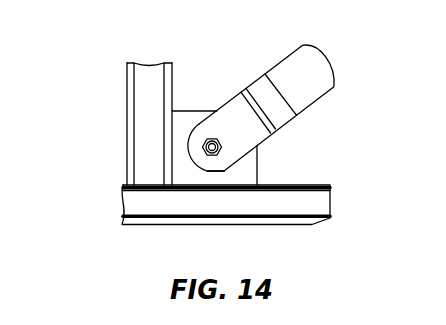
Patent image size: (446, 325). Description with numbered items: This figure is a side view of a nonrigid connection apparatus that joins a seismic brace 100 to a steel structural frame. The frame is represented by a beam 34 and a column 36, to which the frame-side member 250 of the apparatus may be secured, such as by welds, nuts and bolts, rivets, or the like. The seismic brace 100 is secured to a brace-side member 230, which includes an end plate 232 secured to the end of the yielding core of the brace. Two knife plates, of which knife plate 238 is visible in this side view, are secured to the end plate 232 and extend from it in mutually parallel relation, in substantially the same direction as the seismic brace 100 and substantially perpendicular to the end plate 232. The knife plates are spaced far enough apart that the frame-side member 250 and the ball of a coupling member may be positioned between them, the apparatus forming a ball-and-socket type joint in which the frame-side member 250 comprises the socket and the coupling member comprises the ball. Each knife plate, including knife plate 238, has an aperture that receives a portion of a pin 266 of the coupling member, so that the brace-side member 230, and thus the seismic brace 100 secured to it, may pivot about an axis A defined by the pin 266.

The beam 34 is at (296, 206).
The column 36 is at (145, 109).
The seismic brace 100 is at (316, 77).
The brace-side member 230 is at (298, 127).
The end plate 232 is at (240, 93).
The knife plate 238 is at (240, 137).
The frame-side member 250 is at (190, 178).
The pin 266 is at (192, 165).
The axis A is at (201, 147).